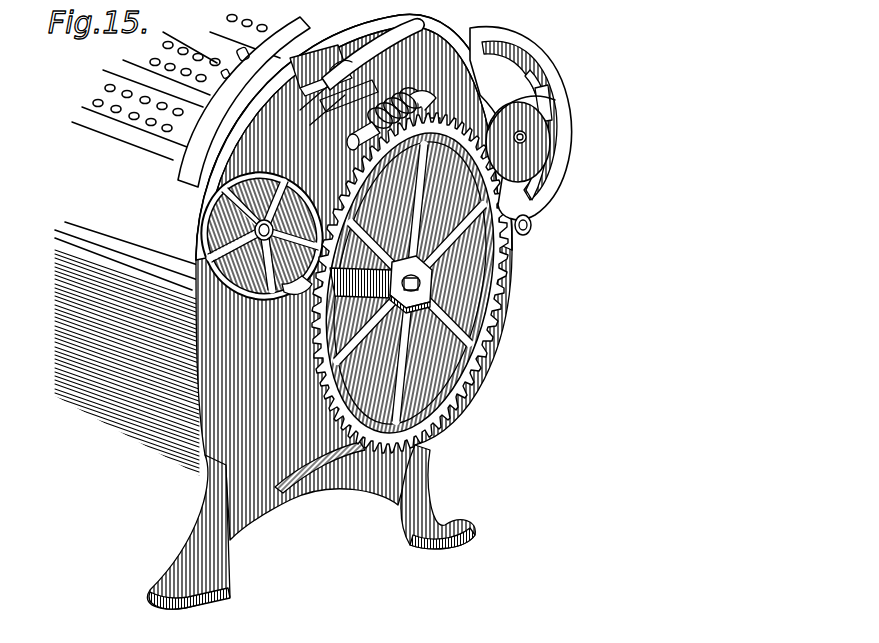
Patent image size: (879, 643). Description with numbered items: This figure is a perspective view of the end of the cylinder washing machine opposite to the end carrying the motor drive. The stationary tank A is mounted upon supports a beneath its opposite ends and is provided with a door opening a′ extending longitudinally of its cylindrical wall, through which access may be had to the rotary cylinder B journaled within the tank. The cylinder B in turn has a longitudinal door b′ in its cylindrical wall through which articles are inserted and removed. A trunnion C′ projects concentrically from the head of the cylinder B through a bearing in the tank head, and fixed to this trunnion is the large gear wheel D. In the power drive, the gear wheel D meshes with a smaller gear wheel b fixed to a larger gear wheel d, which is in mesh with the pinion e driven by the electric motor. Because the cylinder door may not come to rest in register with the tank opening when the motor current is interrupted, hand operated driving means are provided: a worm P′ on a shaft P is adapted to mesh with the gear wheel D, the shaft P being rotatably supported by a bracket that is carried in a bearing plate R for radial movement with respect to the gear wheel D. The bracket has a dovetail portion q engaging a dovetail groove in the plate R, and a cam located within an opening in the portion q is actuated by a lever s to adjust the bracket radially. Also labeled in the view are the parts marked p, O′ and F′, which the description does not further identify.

The stationary tank A is at (155, 440).
The supports a is at (300, 508).
The rotary cylinder B is at (205, 42).
The longitudinal door b′ is at (130, 135).
The door opening a′ is at (175, 160).
The bearing plate R is at (268, 70).
The shaft P is at (262, 300).
The hand wheel shaft p is at (205, 232).
The dovetail portion q is at (320, 55).
The lever s is at (405, 28).
The worm P′ is at (416, 56).
The large gear wheel D is at (425, 283).
The trunnion C′ is at (438, 283).
The wheel rim O′ is at (395, 335).
The pinion bracket F′ is at (547, 117).
The larger gear wheel d is at (545, 105).
The smaller gear wheel b is at (528, 170).
The pinion e is at (540, 222).